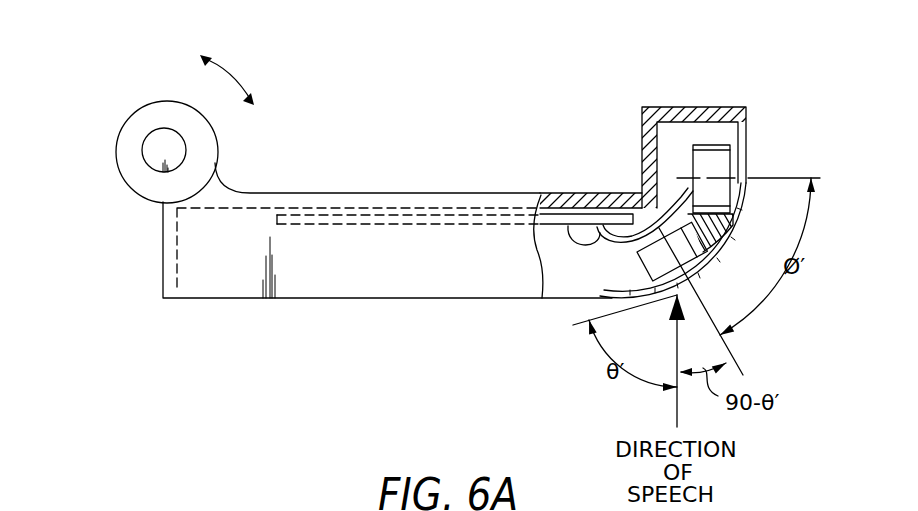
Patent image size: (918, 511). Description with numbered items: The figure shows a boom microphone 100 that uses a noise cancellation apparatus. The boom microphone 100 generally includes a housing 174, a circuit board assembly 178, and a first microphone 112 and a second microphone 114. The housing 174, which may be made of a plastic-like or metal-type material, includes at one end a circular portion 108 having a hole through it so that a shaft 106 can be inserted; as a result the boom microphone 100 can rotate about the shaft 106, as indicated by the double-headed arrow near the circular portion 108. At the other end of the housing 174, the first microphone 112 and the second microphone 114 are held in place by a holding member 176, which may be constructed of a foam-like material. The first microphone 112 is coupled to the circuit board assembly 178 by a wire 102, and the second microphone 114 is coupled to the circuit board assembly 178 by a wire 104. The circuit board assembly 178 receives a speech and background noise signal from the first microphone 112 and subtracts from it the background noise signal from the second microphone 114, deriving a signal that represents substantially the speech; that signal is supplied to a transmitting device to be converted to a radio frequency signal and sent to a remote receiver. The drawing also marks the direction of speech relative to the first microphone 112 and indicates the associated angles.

The housing 100 is at (745, 92).
The plate 102 is at (566, 214).
The flexible band 104 is at (683, 204).
The earpiece aperture 106 is at (152, 155).
The earpiece 108 is at (147, 101).
The microphone 112 is at (638, 262).
The speaker element 114 is at (720, 157).
The arm body 174 is at (332, 292).
The acoustic foam 176 is at (730, 234).
The arm wall section 178 is at (553, 196).